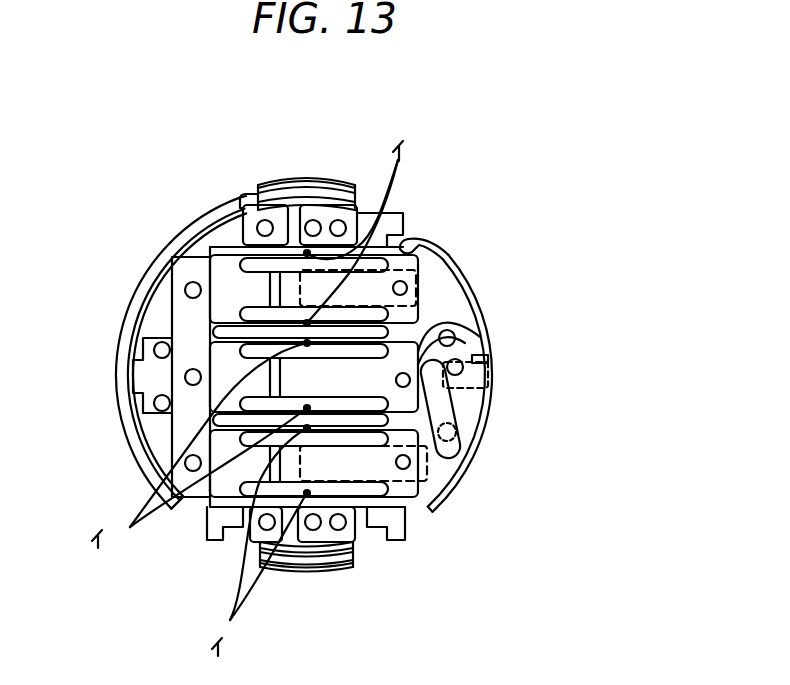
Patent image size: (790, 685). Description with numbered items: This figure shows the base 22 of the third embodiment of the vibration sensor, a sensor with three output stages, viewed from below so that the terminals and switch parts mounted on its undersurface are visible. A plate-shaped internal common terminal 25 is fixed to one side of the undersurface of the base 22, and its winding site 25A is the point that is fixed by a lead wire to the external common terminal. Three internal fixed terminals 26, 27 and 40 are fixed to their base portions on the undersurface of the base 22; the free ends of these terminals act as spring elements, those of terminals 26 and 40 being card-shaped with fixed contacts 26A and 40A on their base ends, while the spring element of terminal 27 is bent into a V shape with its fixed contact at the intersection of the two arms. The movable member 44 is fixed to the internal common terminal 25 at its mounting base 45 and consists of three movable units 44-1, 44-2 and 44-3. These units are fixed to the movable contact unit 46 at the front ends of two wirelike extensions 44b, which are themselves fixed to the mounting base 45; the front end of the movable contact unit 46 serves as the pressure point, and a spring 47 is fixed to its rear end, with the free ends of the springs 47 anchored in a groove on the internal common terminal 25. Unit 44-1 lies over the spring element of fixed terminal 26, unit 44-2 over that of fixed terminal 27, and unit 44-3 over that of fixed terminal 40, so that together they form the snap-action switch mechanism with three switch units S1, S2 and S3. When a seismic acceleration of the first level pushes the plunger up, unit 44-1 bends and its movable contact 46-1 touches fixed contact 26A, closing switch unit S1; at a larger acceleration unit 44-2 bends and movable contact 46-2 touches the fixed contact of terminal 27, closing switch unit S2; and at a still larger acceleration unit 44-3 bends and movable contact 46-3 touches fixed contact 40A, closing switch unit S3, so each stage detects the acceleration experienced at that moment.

The base 22 is at (132, 452).
The internal common terminal 25 is at (358, 222).
The winding site 25A is at (405, 272).
The internal fixed terminal 26 is at (490, 383).
The fixed contact 26A is at (488, 375).
The internal fixed terminal 27 is at (228, 527).
The internal fixed terminal 40 is at (373, 525).
The fixed contact 40A is at (427, 480).
The movable member 44 is at (198, 262).
The wirelike extensions 44b is at (262, 250).
The movable unit 44-1 is at (410, 230).
The movable unit 44-2 is at (410, 272).
The movable unit 44-3 is at (410, 458).
The mounting base 45 is at (185, 320).
The movable contact unit 46 is at (407, 247).
The movable contact 46-1 is at (407, 288).
The movable contact 46-2 is at (410, 380).
The movable contact 46-3 is at (410, 467).
The spring 47 is at (320, 288).
The switch unit S1 is at (618, 193).
The switch unit S2 is at (622, 333).
The switch unit S3 is at (612, 497).